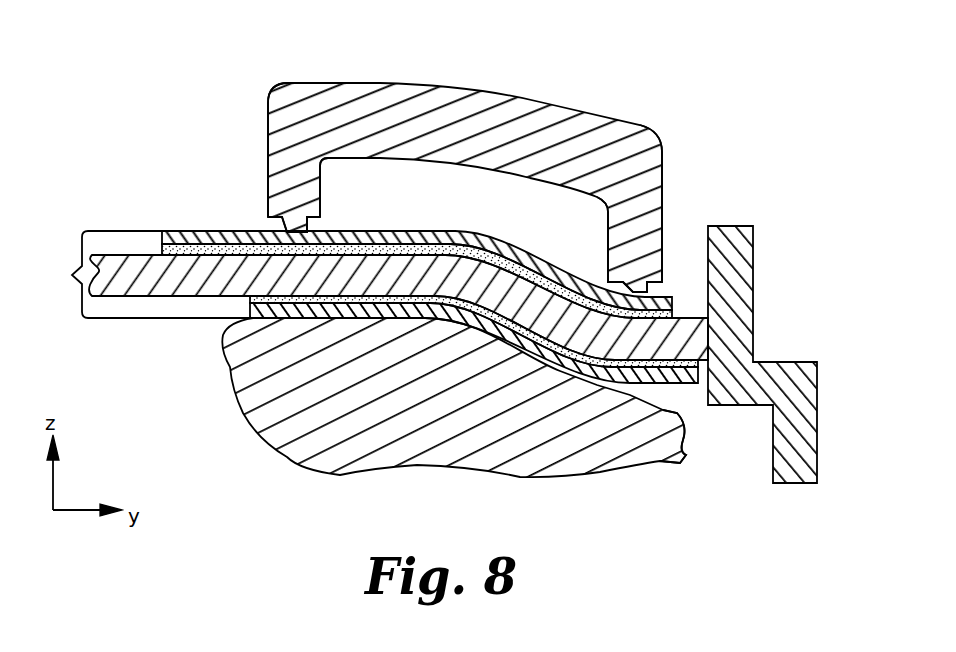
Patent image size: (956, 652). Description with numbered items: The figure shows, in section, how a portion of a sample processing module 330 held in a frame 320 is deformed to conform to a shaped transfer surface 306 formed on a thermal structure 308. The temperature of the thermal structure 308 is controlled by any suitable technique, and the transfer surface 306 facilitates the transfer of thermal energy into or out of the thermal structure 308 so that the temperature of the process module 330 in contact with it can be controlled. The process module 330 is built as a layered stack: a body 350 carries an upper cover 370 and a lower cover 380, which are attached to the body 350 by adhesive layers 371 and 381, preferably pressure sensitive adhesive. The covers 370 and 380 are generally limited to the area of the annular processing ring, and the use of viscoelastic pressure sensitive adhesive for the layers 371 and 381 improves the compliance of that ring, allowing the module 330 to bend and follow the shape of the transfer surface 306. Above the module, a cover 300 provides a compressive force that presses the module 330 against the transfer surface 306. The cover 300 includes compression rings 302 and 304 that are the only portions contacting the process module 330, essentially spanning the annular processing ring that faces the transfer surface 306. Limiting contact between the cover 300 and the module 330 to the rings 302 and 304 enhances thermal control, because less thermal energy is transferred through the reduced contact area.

The cover 300 is at (518, 100).
The compression ring 302 is at (277, 137).
The compression ring 304 is at (652, 167).
The shaped transfer surface 306 is at (675, 413).
The thermal structure 308 is at (442, 455).
The frame 320 is at (745, 272).
The sample processing module 330 is at (131, 274).
The body 350 is at (138, 290).
The cover 370 is at (177, 240).
The adhesive layer 371 is at (243, 249).
The cover 380 is at (263, 313).
The adhesive layer 381 is at (250, 300).